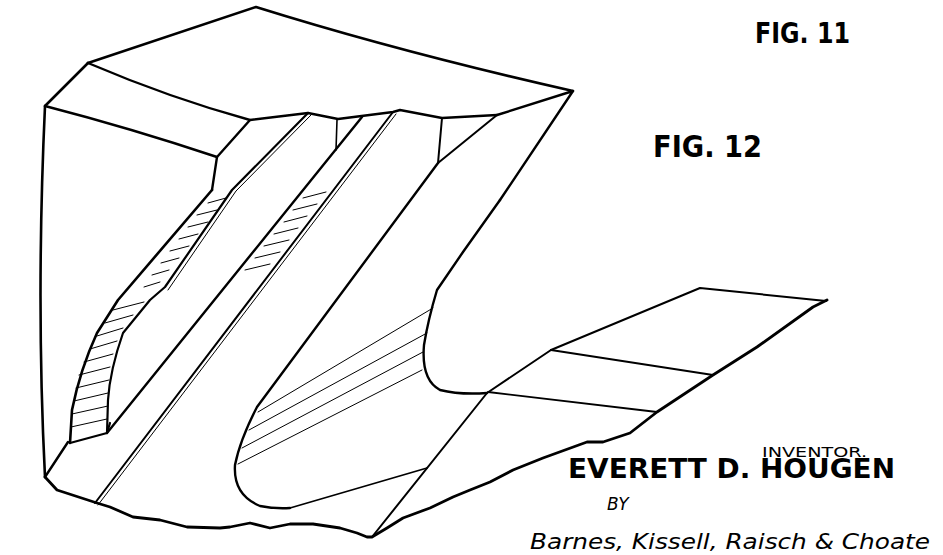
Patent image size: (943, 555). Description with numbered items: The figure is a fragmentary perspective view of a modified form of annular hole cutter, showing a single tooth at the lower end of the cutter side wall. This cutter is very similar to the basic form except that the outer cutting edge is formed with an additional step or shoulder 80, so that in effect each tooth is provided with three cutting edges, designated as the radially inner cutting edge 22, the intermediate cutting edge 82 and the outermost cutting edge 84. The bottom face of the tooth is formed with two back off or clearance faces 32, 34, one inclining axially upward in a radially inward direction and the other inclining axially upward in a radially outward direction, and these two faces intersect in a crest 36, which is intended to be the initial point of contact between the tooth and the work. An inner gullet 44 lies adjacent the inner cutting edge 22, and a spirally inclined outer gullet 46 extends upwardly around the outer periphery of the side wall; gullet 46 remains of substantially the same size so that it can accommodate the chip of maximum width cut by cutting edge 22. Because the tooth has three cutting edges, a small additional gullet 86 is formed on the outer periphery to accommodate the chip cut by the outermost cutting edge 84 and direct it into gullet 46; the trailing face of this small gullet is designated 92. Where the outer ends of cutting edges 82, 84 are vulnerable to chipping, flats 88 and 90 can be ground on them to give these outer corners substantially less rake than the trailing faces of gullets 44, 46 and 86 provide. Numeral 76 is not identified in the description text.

The radially inner cutting edge 22 is at (527, 100).
The back off face 32 is at (293, 25).
The back off face 34 is at (128, 127).
The crest 36 is at (652, 367).
The inner gullet 44 is at (460, 248).
The outer gullet 46 is at (325, 322).
The outer cutting face land 76 is at (460, 125).
The step or shoulder 80 is at (323, 117).
The cutting edge 82 is at (373, 118).
The outermost cutting edge 84 is at (278, 120).
The small additional gullet 86 is at (170, 300).
The flat 88 is at (352, 118).
The flat 90 is at (255, 118).
The trailing face of gullet 86 92 is at (188, 213).